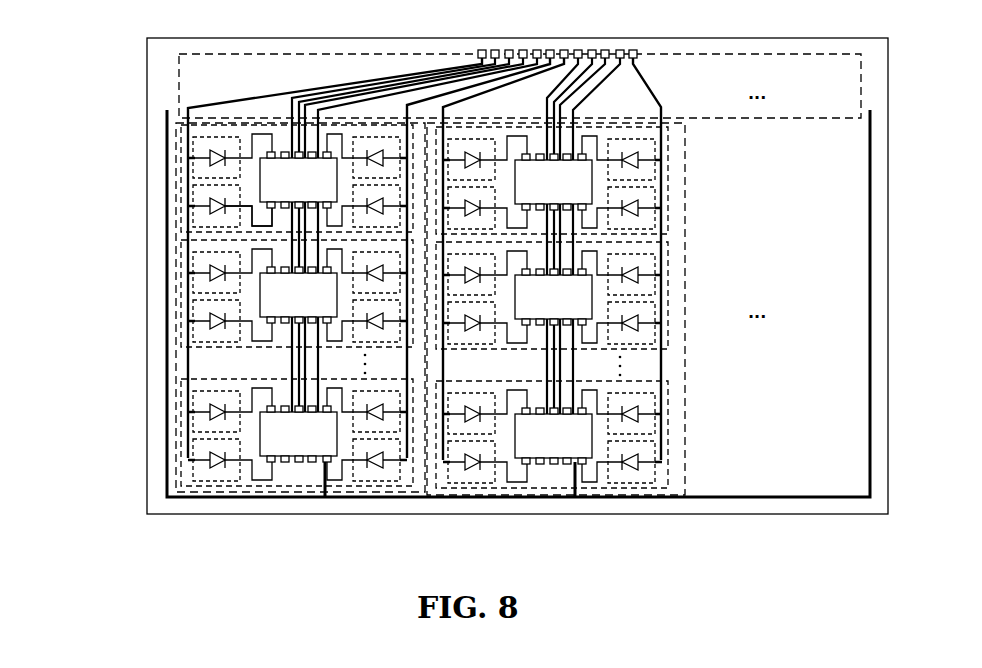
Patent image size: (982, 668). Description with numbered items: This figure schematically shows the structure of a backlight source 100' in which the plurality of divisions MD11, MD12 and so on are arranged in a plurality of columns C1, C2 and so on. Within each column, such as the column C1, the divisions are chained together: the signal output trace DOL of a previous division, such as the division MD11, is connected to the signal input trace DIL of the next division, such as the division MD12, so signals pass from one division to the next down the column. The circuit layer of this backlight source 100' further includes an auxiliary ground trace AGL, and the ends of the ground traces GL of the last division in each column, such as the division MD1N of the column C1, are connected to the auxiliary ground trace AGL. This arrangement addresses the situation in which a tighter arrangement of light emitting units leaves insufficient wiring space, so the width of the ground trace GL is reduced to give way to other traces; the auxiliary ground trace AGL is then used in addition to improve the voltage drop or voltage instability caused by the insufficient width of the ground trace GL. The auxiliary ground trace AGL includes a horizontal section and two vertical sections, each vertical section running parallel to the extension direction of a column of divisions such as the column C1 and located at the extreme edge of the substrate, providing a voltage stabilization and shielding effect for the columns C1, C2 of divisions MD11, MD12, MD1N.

The backlight source 100' is at (462, 275).
The division MD11 is at (180, 188).
The division MD12 is at (180, 285).
The last division MD1N is at (180, 445).
The signal output trace DOL is at (292, 228).
The signal input trace DIL is at (292, 247).
The column C1 is at (231, 307).
The column C2 is at (687, 458).
The auxiliary ground trace AGL is at (232, 498).
The ground trace GL is at (317, 478).